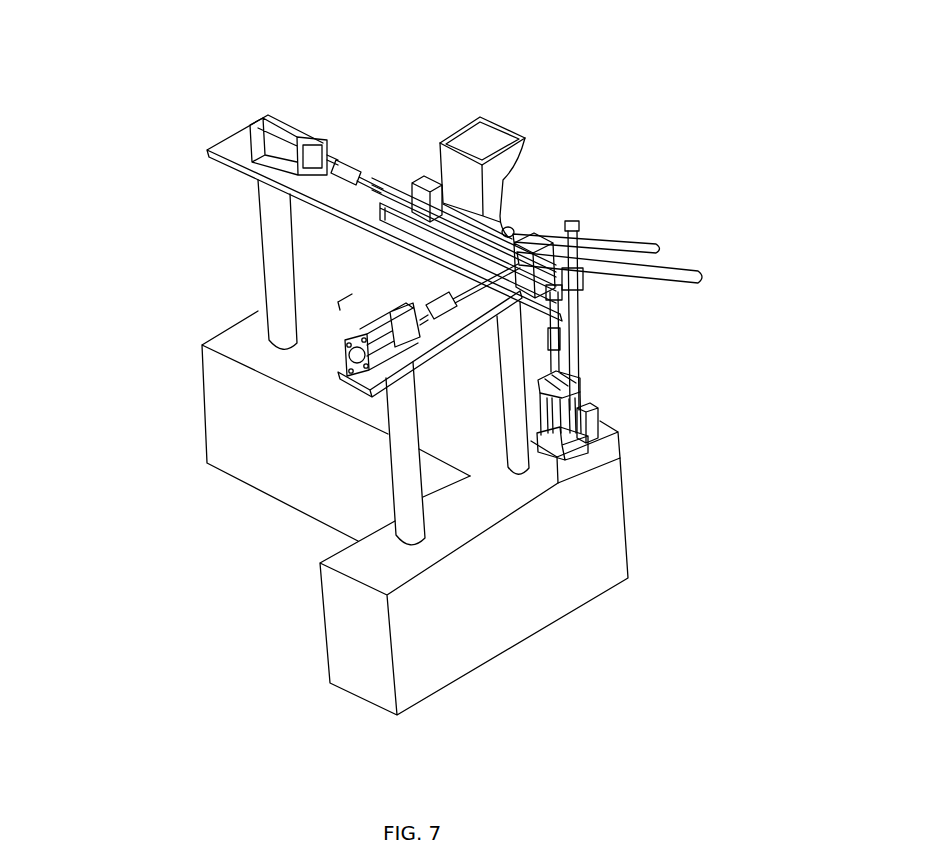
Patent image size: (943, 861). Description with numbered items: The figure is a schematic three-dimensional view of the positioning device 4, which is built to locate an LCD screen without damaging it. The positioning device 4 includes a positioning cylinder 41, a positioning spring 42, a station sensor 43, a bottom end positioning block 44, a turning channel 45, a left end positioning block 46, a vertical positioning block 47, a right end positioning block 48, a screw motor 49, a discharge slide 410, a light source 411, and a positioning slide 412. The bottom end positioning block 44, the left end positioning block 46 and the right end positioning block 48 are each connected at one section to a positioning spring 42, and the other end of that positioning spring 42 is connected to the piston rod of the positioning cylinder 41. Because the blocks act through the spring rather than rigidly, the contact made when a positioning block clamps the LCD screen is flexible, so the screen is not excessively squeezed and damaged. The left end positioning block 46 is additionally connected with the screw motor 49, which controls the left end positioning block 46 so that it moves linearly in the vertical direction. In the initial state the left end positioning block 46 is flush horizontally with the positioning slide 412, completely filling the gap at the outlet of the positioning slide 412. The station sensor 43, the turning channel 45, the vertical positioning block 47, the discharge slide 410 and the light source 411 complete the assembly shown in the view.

The positioning device 4 is at (328, 382).
The positioning cylinder 41 is at (255, 158).
The positioning spring 42 is at (383, 190).
The station sensor 43 is at (362, 221).
The bottom end positioning block 44 is at (432, 182).
The turning channel 45 is at (488, 137).
The left end positioning block 46 is at (524, 240).
The vertical positioning block 47 is at (571, 222).
The right end positioning block 48 is at (579, 278).
The screw motor 49 is at (597, 445).
The discharge slide 410 is at (660, 250).
The light source 411 is at (553, 290).
The positioning slide 412 is at (338, 302).